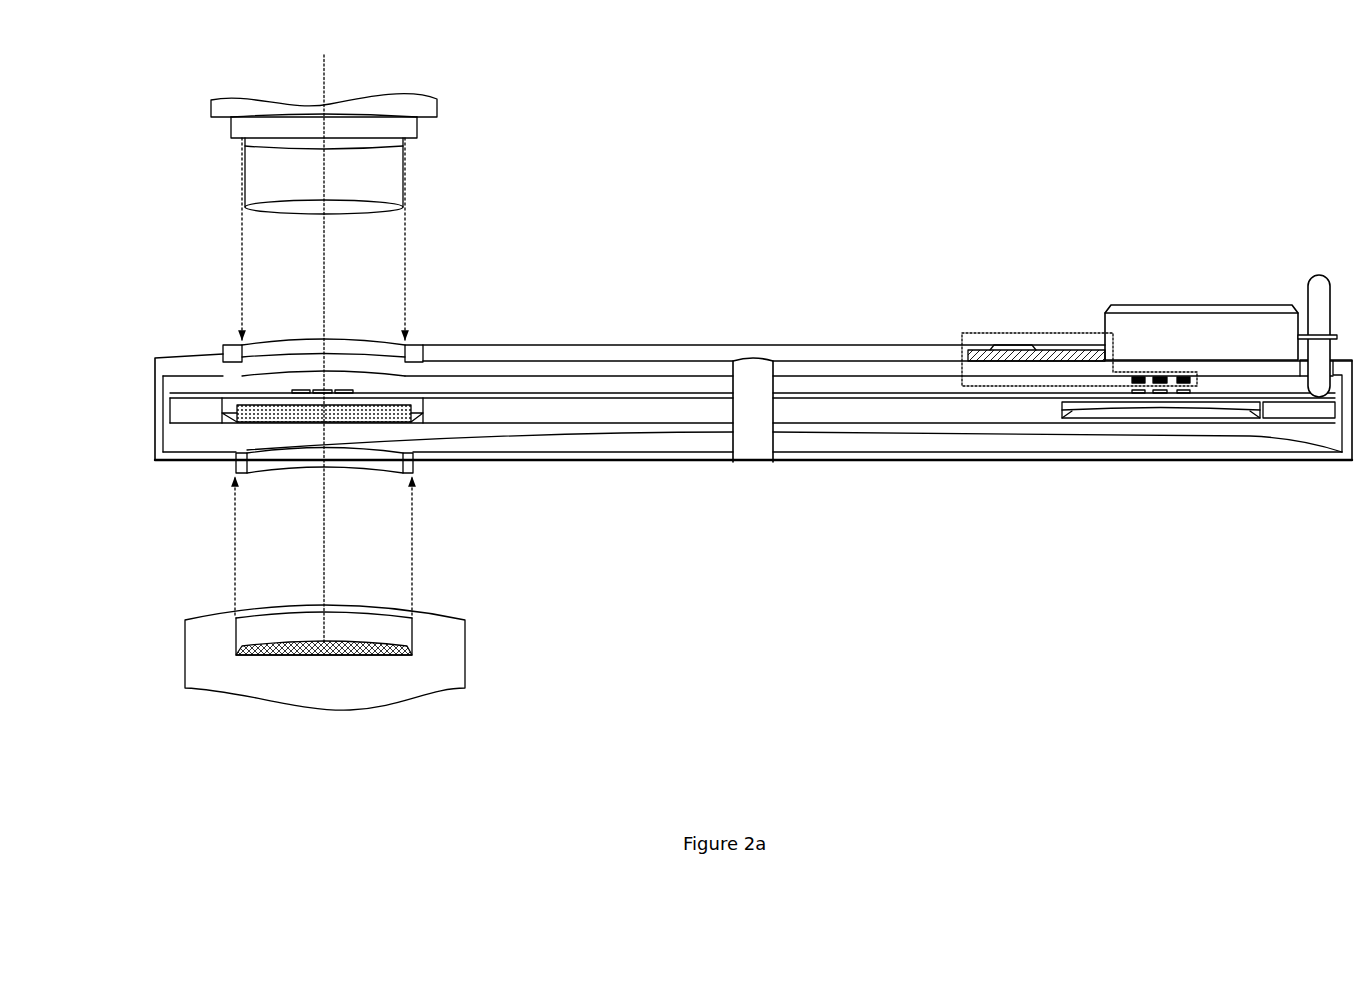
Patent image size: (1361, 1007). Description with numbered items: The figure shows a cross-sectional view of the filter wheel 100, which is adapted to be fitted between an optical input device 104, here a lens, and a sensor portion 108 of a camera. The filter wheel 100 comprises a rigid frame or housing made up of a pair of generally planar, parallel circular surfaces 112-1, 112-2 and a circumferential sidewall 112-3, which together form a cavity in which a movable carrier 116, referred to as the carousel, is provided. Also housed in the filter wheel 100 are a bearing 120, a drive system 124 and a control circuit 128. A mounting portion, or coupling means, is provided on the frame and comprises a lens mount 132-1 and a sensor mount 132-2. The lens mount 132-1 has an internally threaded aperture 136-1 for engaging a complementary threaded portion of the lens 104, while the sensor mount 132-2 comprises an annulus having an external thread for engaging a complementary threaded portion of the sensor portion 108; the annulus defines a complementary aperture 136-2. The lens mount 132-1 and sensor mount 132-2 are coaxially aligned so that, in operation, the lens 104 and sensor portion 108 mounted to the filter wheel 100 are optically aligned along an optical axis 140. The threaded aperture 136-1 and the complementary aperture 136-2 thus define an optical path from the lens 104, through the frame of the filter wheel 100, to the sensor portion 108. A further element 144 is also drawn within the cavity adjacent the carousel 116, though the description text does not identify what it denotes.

The filter wheel 100 is at (930, 229).
The optical input device 104 is at (462, 171).
The sensor portion 108 is at (358, 657).
The planar parallel circular surface 112-1 is at (633, 352).
The planar parallel circular surface 112-2 is at (618, 477).
The circumferential sidewall 112-3 is at (154, 398).
The movable carrier 116 is at (868, 415).
The bearing 120 is at (753, 358).
The drive system 124 is at (1242, 256).
The control circuit 128 is at (1050, 332).
The lens mount 132-1 is at (419, 343).
The sensor mount 132-2 is at (415, 470).
The internally threaded aperture 136-1 is at (293, 313).
The complementary aperture 136-2 is at (286, 490).
The optical axis 140 is at (326, 77).
The image sensor 144 is at (262, 416).